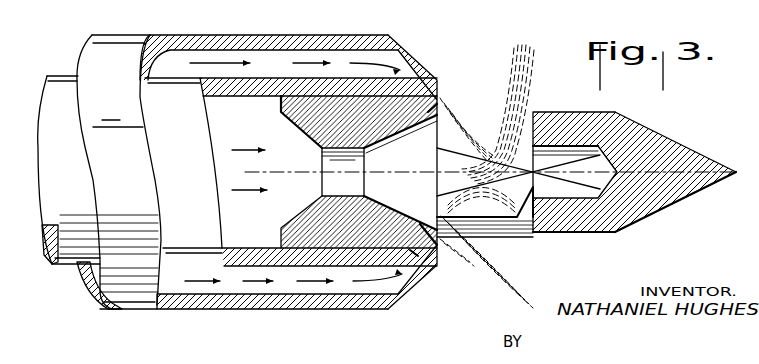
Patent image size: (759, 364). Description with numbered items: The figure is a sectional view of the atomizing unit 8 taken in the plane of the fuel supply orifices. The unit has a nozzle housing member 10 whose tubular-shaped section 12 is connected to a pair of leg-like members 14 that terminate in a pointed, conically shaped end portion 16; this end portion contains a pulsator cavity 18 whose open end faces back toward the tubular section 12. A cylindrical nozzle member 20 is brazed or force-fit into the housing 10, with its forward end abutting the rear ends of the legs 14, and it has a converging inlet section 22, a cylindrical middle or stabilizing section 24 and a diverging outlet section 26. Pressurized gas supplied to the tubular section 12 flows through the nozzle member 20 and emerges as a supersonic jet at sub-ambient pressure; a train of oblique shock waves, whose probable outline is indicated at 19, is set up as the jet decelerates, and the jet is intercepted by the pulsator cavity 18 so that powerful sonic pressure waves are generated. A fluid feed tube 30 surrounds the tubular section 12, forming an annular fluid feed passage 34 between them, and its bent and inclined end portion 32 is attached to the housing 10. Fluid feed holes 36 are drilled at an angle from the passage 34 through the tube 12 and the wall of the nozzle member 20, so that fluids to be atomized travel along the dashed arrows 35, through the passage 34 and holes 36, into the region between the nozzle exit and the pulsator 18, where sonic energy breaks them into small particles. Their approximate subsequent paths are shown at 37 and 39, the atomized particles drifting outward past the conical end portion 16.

The atomizing unit 8 is at (405, 325).
The nozzle housing member 10 is at (552, 257).
The tubular-shaped section 12 is at (165, 78).
The leg-like members 14 is at (480, 237).
The conically shaped end portion 16 is at (660, 136).
The pulsator cavity 18 is at (587, 190).
The shock wave outline 19 is at (556, 166).
The cylindrical nozzle member 20 is at (280, 103).
The converging inlet section 22 is at (312, 160).
The cylindrical middle or stabilizing section 24 is at (331, 190).
The diverging outlet section 26 is at (375, 192).
The fluid feed tube 30 is at (251, 37).
The bent and inclined end portion 32 is at (418, 60).
The annular fluid feed passage 34 is at (214, 60).
The dashed arrows 35 is at (315, 60).
The fluid feed holes 36 is at (433, 101).
The fluid path 37 is at (537, 50).
The fluid path 39 is at (527, 291).